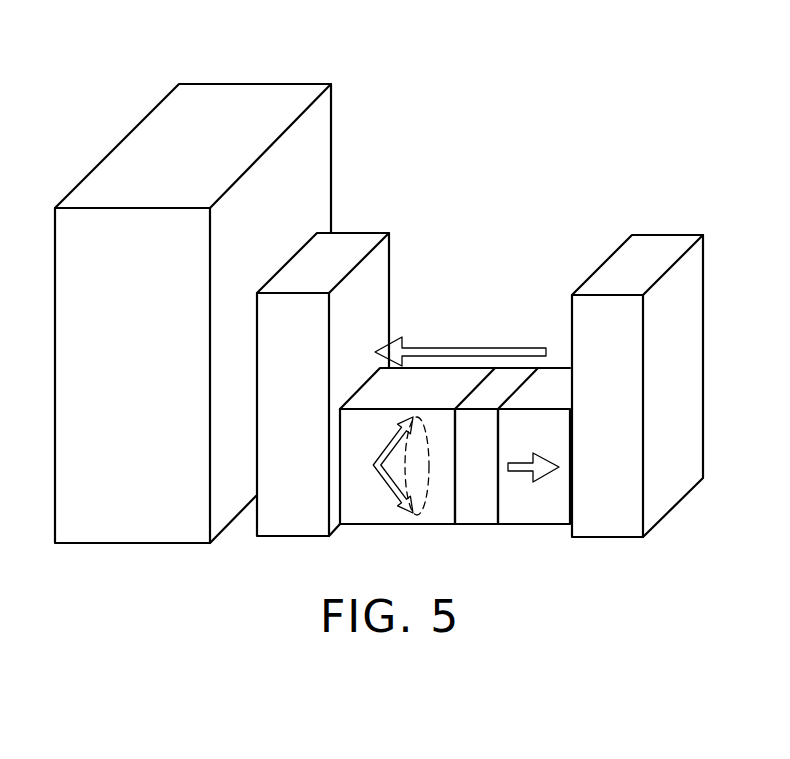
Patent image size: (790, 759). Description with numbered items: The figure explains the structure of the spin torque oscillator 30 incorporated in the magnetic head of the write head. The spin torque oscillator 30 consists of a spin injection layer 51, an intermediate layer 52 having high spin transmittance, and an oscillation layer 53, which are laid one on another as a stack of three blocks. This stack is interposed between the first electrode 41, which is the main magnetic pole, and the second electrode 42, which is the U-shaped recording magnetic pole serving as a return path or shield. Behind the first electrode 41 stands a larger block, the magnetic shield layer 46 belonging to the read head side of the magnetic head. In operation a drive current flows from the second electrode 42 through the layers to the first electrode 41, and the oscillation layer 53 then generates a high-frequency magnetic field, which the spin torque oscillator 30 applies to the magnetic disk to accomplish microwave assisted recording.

The spin torque oscillator 30 is at (487, 305).
The first electrode 41 is at (356, 243).
The second electrode 42 is at (655, 242).
The magnetic shield layer 46 is at (250, 93).
The spin injection layer 51 is at (538, 518).
The intermediate layer 52 is at (474, 518).
The oscillation layer 53 is at (370, 518).